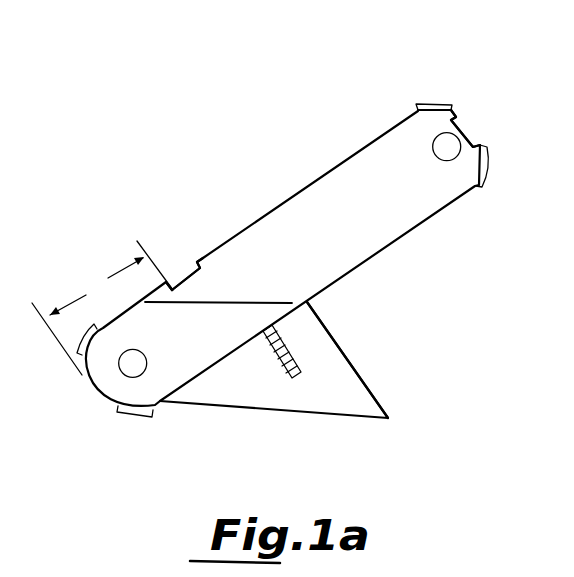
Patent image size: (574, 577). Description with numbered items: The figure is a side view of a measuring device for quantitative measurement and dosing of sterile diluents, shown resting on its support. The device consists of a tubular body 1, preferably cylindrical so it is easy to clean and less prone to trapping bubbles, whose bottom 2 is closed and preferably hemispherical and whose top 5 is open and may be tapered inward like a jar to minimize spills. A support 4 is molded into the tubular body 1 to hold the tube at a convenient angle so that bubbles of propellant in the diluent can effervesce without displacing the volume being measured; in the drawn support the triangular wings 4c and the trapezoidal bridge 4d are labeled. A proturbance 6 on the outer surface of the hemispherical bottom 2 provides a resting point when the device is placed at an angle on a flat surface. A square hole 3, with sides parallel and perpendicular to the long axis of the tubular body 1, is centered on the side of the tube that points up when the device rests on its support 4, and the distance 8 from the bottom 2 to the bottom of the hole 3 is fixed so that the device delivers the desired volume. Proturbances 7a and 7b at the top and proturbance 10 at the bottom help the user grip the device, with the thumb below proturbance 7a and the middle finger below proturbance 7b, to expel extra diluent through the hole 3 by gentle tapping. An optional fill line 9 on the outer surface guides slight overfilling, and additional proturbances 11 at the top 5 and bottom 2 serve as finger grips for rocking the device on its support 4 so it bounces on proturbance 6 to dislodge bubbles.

The tubular body 1 is at (345, 140).
The bottom of the tube 2 is at (95, 388).
The square hole 3 is at (182, 277).
The support 4 is at (382, 401).
The triangular wings 4c is at (343, 370).
The trapezoidal bridge 4d is at (283, 370).
The top of the tube 5 is at (467, 133).
The proturbance 6 is at (138, 417).
The proturbance 7a is at (432, 104).
The proturbance 7b is at (487, 171).
The distance 8 is at (102, 308).
The fill line 9 is at (243, 302).
The proturbance 10 is at (80, 345).
The additional proturbances 11 is at (132, 367).